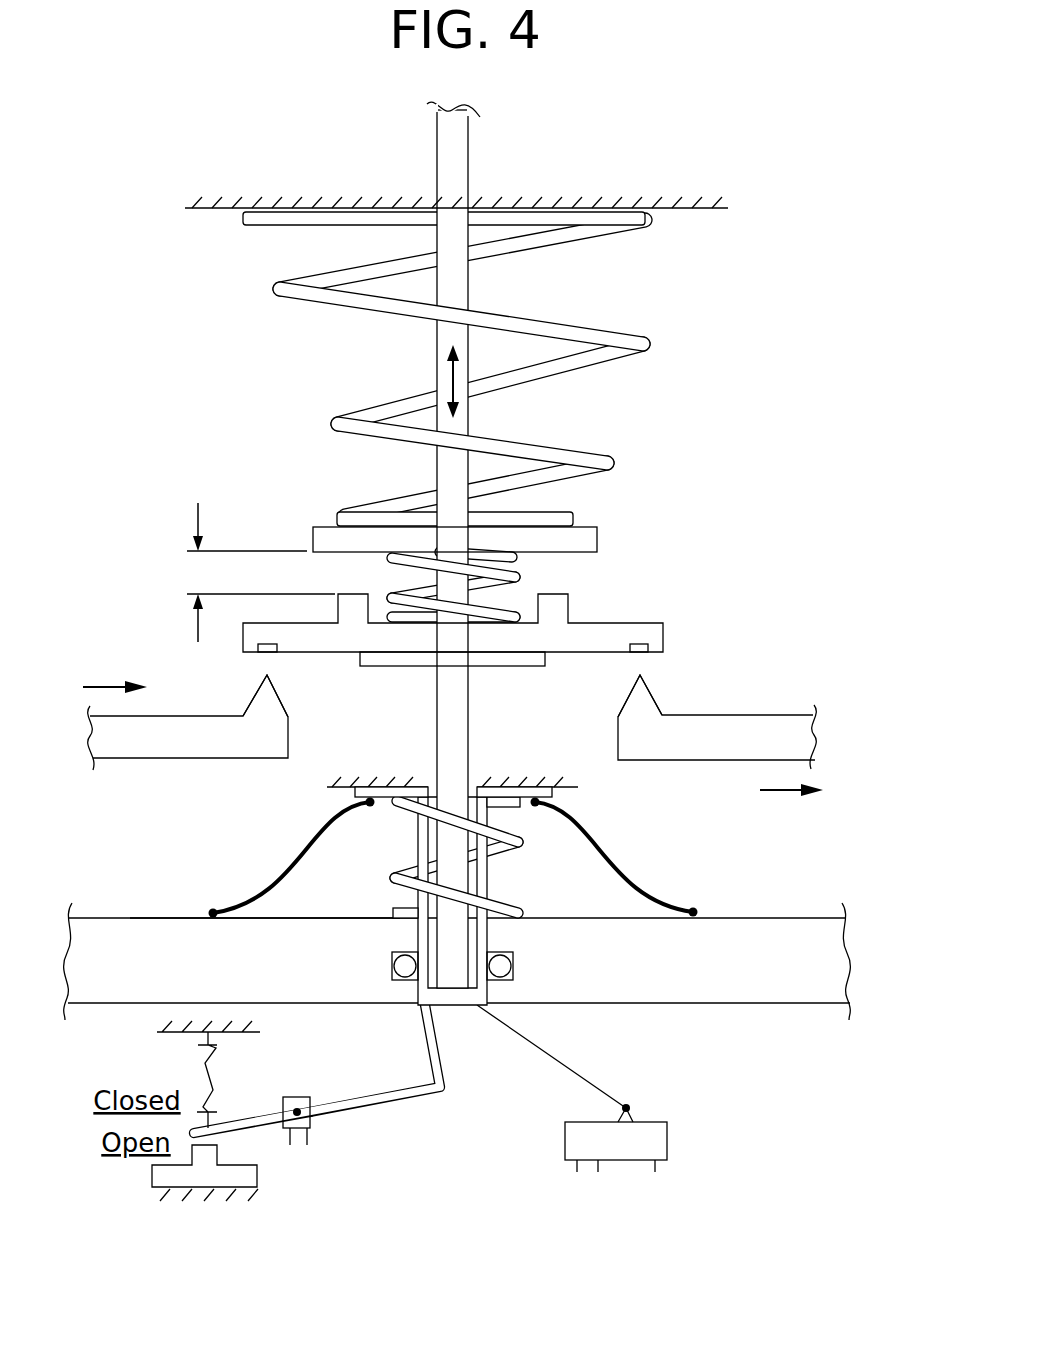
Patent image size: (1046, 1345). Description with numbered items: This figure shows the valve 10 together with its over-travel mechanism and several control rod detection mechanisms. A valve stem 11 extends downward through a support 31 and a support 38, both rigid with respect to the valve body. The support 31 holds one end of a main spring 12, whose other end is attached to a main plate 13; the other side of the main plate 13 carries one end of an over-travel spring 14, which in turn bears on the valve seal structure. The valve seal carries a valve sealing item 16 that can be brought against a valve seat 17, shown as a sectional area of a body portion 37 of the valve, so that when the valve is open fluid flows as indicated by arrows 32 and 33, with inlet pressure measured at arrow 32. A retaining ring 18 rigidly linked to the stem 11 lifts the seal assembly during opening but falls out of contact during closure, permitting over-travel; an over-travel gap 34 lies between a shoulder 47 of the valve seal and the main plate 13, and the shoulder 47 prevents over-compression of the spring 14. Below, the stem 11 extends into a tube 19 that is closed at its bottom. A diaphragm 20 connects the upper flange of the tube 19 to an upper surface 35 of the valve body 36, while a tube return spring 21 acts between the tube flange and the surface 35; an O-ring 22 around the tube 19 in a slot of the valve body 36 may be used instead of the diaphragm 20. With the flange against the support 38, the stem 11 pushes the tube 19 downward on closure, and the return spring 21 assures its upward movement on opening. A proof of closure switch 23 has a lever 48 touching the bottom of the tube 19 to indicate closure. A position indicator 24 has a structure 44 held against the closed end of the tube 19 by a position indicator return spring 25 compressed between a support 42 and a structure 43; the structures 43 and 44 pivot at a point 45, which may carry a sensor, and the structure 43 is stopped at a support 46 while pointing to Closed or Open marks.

The valve 10 is at (768, 174).
The valve stem 11 is at (440, 148).
The main spring 12 is at (598, 332).
The main plate 13 is at (597, 541).
The over-travel spring 14 is at (512, 575).
The valve sealing item 16 is at (264, 652).
The valve seat 17 is at (275, 682).
The retaining ring 18 is at (510, 667).
The tube 19 is at (455, 1008).
The diaphragm 20 is at (625, 850).
The tube return spring 21 is at (518, 842).
The O-ring 22 is at (392, 965).
The proof of closure switch 23 is at (667, 1140).
The position indicator 24 is at (332, 1168).
The position indicator return spring 25 is at (207, 1058).
The support 31 is at (688, 212).
The arrow 32 is at (100, 685).
The arrow 33 is at (780, 791).
The over-travel gap 34 is at (198, 512).
The upper surface 35 is at (130, 917).
The valve body 36 is at (457, 961).
The body portion 37 is at (172, 758).
The support 38 is at (355, 786).
The support 42 is at (165, 1030).
The structure 43 is at (245, 1117).
The structure 44 is at (447, 1094).
The pivot point 45 is at (300, 1097).
The support 46 is at (252, 1188).
The shoulder 47 is at (568, 605).
The lever 48 is at (570, 1071).